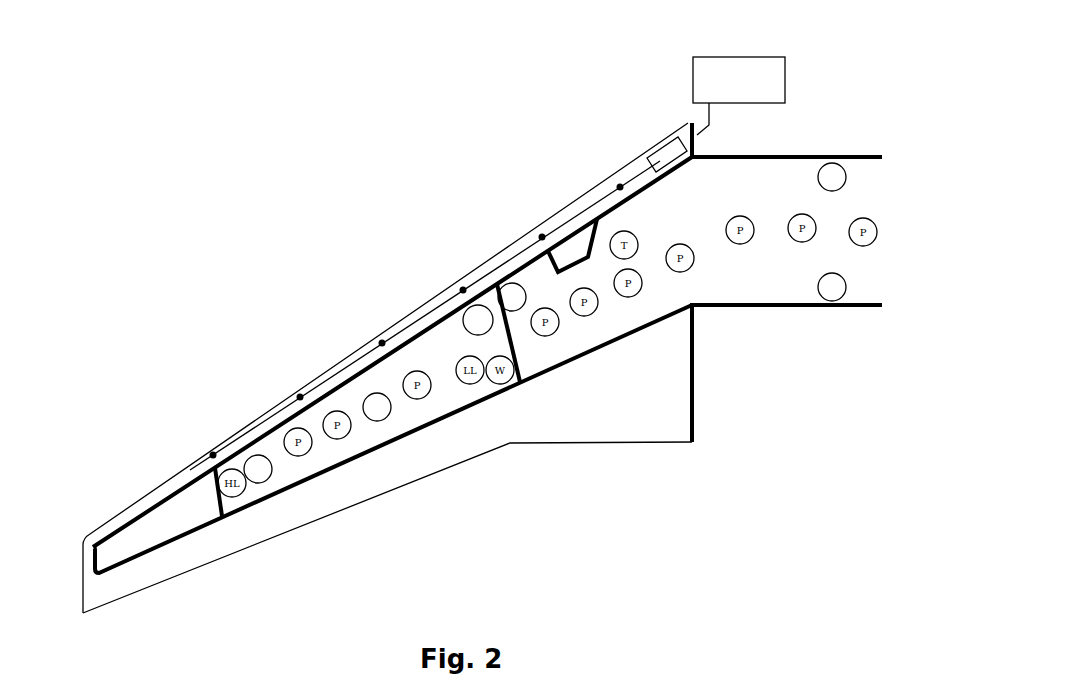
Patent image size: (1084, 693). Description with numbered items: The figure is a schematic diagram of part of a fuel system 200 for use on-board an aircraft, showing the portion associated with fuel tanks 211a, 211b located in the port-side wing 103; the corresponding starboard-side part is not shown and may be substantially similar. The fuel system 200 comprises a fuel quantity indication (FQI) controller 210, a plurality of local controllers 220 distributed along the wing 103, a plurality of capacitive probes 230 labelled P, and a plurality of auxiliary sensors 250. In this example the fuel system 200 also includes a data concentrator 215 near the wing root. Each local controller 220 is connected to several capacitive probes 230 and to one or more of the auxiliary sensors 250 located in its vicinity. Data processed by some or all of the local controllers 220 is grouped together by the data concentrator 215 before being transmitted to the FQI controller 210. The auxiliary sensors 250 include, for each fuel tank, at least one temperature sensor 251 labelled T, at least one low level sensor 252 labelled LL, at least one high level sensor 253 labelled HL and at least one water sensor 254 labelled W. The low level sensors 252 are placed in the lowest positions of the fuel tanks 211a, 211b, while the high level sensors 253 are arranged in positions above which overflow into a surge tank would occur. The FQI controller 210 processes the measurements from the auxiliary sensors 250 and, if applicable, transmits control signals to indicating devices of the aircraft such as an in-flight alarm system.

The wing 103 is at (171, 465).
The fuel system 200 is at (358, 145).
The fuel quantity indication (FQI) controller 210 is at (698, 77).
The data concentrator 215 is at (663, 148).
The local controller 220 is at (298, 393).
The fuel tank 211a is at (432, 352).
The fuel tank 211b is at (720, 282).
The auxiliary sensor 250 is at (478, 307).
The temperature sensor 251 is at (270, 472).
The low level sensor 252 is at (832, 167).
The high level sensor 253 is at (515, 311).
The water sensor 254 is at (832, 301).
The capacitive probe 230 is at (391, 410).